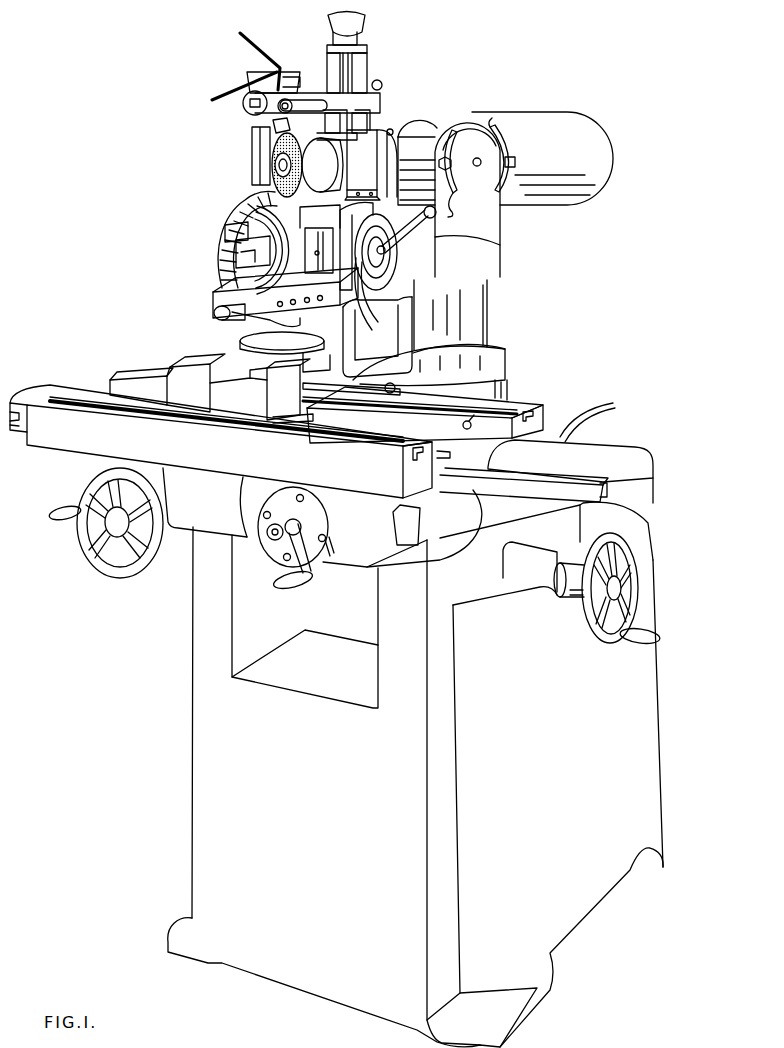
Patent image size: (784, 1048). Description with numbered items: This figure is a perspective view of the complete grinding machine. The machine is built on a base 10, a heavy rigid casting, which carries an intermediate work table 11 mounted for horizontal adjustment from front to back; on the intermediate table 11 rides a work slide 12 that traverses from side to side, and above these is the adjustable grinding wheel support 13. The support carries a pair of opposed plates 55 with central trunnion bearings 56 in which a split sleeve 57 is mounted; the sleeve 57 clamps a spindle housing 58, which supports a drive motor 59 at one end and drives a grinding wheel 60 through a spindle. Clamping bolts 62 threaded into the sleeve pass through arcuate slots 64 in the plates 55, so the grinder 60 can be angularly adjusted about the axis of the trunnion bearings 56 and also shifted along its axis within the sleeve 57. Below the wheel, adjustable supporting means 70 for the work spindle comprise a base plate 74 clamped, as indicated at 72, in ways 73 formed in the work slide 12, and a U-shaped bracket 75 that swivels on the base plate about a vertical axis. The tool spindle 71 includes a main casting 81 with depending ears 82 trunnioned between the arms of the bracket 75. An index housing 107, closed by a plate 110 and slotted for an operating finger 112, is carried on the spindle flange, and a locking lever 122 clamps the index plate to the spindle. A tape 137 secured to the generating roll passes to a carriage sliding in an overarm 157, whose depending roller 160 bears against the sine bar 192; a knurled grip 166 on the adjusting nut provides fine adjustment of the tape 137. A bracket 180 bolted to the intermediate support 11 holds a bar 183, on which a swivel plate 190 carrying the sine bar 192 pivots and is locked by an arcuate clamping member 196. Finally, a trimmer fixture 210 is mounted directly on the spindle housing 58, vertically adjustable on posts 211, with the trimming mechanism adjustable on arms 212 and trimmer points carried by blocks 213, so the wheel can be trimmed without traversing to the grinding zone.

The base 10 is at (652, 707).
The intermediate work table 11 is at (210, 517).
The work slide 12 is at (612, 455).
The grinding wheel support 13 is at (503, 235).
The opposed plates 55 is at (420, 143).
The trunnion bearings 56 is at (478, 158).
The split sleeve 57 is at (455, 118).
The spindle housing 58 is at (392, 132).
The drive motor 59 is at (605, 163).
The grinding wheel 60 is at (275, 158).
The clamping bolts 62 is at (449, 163).
The arcuate slots 64 is at (492, 133).
The adjustable supporting means 70 is at (396, 318).
The tool spindle 71 is at (255, 271).
The clamping 72 is at (395, 373).
The ways 73 is at (518, 402).
The base plate 74 is at (357, 392).
The U-shaped bracket 75 is at (408, 331).
The main casting 81 is at (390, 266).
The depending ears 82 is at (362, 322).
The index housing 107 is at (303, 258).
The plate 110 is at (231, 231).
The operating finger 112 is at (237, 210).
The locking lever 122 is at (500, 245).
The tape 137 is at (243, 288).
The overarm 157 is at (215, 313).
The roller 160 is at (257, 323).
The knurled grip 166 is at (240, 322).
The bracket 180 is at (248, 427).
The bar 183 is at (202, 366).
The swivel plate 190 is at (258, 396).
The sine bar 192 is at (290, 391).
The arcuate clamping member 196 is at (292, 342).
The trimmer fixture 210 is at (383, 102).
The posts 211 is at (335, 63).
The arms 212 is at (313, 92).
The blocks 213 is at (270, 128).